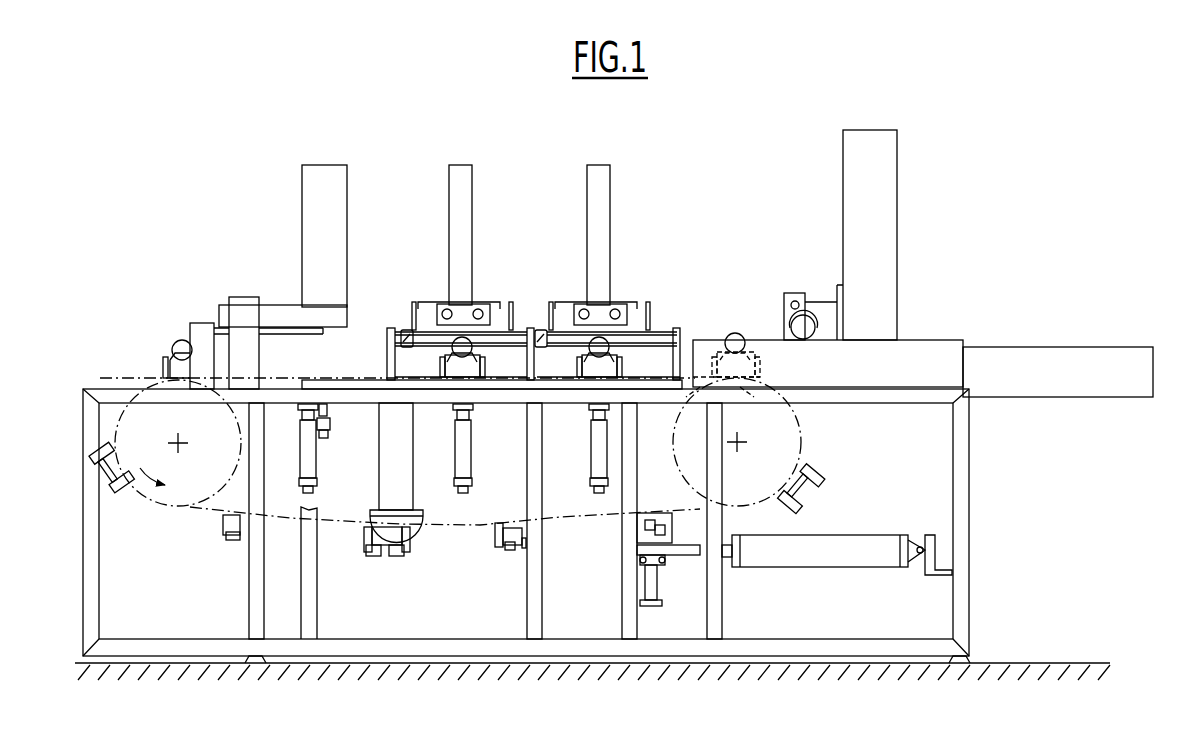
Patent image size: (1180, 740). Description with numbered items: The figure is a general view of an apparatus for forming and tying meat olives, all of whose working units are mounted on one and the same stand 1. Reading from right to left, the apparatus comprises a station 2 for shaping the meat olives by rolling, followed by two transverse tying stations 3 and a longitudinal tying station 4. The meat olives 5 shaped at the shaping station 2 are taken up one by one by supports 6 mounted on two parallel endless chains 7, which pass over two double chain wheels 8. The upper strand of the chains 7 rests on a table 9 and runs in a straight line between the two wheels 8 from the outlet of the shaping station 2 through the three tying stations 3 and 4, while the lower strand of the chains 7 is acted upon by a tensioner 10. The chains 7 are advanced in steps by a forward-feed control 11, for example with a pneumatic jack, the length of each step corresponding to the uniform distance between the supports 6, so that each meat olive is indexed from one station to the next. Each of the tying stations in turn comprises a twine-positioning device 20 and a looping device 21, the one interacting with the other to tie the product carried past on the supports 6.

The stand 1 is at (972, 510).
The shaping station 2 is at (898, 215).
The transverse tying stations 3 is at (480, 213).
The longitudinal tying station 4 is at (283, 250).
The meat olives 5 is at (335, 344).
The supports 6 is at (347, 355).
The endless chains 7 is at (455, 530).
The double chain wheels 8 is at (118, 430).
The table 9 is at (362, 391).
The tensioner 10 is at (395, 484).
The forward-feed control 11 is at (857, 532).
The twine-positioning device 20 is at (404, 326).
The looping device 21 is at (478, 302).